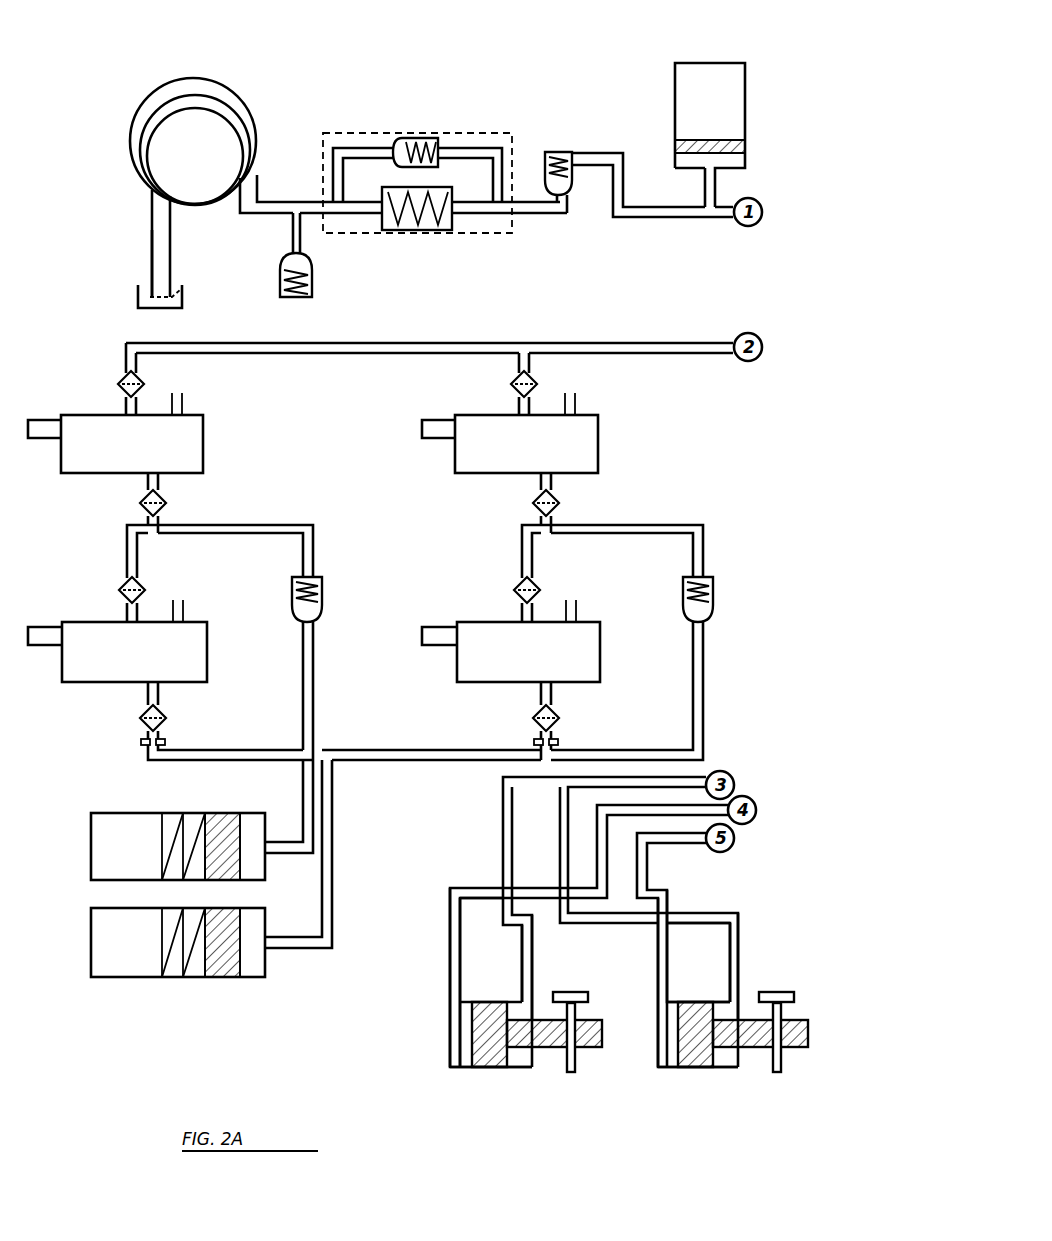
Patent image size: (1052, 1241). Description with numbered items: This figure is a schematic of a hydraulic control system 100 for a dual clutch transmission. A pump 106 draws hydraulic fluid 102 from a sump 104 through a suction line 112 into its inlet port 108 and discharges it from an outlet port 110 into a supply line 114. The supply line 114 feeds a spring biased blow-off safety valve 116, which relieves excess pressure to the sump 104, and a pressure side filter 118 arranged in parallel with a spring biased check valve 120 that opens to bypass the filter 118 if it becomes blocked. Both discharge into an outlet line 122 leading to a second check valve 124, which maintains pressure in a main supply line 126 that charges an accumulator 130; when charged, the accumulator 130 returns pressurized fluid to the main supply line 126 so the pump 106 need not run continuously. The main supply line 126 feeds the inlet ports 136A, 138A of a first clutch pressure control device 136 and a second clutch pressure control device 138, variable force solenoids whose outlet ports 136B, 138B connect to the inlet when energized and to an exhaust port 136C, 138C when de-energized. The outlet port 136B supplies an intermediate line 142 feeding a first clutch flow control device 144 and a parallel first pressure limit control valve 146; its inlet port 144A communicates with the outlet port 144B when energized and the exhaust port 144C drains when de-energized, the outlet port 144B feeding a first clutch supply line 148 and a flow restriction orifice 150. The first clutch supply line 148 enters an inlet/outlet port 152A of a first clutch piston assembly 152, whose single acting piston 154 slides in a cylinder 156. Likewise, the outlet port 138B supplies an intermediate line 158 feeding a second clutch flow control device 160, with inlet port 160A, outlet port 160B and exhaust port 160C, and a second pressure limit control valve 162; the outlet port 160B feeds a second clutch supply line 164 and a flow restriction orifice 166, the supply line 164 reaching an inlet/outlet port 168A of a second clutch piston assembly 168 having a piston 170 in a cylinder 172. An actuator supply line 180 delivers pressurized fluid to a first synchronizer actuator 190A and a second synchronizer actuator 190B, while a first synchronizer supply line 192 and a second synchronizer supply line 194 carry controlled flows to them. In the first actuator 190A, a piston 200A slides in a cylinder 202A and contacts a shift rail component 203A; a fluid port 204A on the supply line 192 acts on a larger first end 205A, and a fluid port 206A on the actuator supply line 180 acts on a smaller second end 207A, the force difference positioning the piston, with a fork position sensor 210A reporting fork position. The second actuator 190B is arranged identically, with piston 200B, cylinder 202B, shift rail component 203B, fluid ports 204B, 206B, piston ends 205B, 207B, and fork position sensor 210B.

The hydraulic control system 100 is at (132, 60).
The hydraulic fluid 102 is at (180, 290).
The sump 104 is at (138, 298).
The pump 106 is at (255, 100).
The inlet port 108 is at (160, 205).
The outlet port 110 is at (258, 180).
The suction line 112 is at (160, 258).
The supply line 114 is at (268, 222).
The spring biased blow-off safety valve 116 is at (314, 272).
The pressure side filter 118 is at (430, 232).
The spring biased check valve 120 is at (420, 137).
The outlet line 122 is at (530, 215).
The second check valve 124 is at (576, 187).
The main supply line 126 is at (672, 219).
The accumulator 130 is at (725, 78).
The first clutch pressure control device 136 is at (205, 435).
The inlet port 136A is at (122, 405).
The outlet port 136B is at (148, 485).
The exhaust port 136C is at (184, 400).
The second clutch pressure control device 138 is at (600, 435).
The inlet port 138A is at (515, 405).
The outlet port 138B is at (541, 485).
The exhaust port 138C is at (577, 400).
The intermediate line 142 is at (247, 525).
The first clutch flow control device 144 is at (209, 640).
The inlet port 144A is at (122, 613).
The outlet port 144B is at (148, 692).
The exhaust port 144C is at (185, 608).
The first pressure limit control valve 146 is at (323, 600).
The first clutch supply line 148 is at (247, 750).
The flow restriction orifice 150 is at (140, 743).
The first clutch piston assembly 152 is at (90, 850).
The inlet/outlet port 152A is at (268, 848).
The single acting piston 154 is at (228, 872).
The cylinder 156 is at (268, 830).
The intermediate line 158 is at (664, 525).
The second clutch flow control device 160 is at (602, 650).
The inlet port 160A is at (517, 613).
The outlet port 160B is at (540, 692).
The exhaust port 160C is at (578, 610).
The second pressure limit control valve 162 is at (714, 602).
The second clutch supply line 164 is at (536, 736).
The flow restriction orifice 166 is at (560, 743).
The second clutch piston assembly 168 is at (90, 948).
The inlet/outlet port 168A is at (270, 945).
The single acting piston 170 is at (228, 920).
The cylinder 172 is at (248, 970).
The actuator supply line 180 is at (500, 818).
The first synchronizer actuator 190A is at (494, 1082).
The second synchronizer actuator 190B is at (700, 1082).
The first synchronizer supply line 192 is at (607, 852).
The second synchronizer supply line 194 is at (672, 905).
The piston 200A is at (487, 1002).
The piston 200B is at (695, 1002).
The piston housing or cylinder 202A is at (452, 1060).
The piston housing or cylinder 202B is at (700, 1068).
The shift rail component 203A is at (598, 1050).
The shift rail component 203B is at (805, 1050).
The fluid port 204A is at (452, 1000).
The fluid port 204B is at (660, 1008).
The first end 205A is at (470, 1030).
The first end 205B is at (680, 1040).
The fluid port 206A is at (530, 1000).
The fluid port 206B is at (740, 1000).
The second end 207A is at (568, 1073).
The second end 207B is at (775, 1073).
The fork position sensor 210A is at (590, 990).
The fork position sensor 210B is at (796, 990).